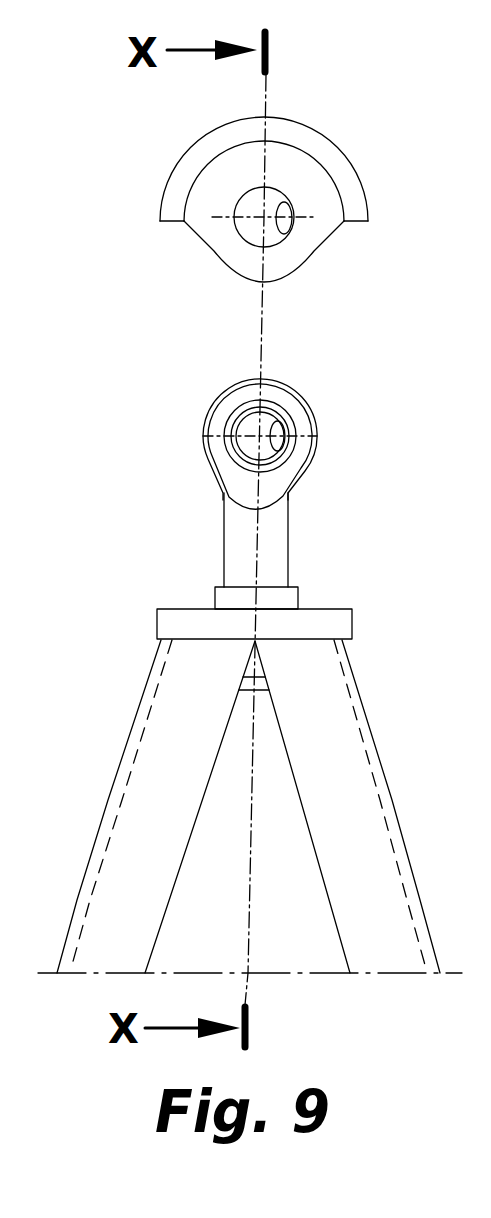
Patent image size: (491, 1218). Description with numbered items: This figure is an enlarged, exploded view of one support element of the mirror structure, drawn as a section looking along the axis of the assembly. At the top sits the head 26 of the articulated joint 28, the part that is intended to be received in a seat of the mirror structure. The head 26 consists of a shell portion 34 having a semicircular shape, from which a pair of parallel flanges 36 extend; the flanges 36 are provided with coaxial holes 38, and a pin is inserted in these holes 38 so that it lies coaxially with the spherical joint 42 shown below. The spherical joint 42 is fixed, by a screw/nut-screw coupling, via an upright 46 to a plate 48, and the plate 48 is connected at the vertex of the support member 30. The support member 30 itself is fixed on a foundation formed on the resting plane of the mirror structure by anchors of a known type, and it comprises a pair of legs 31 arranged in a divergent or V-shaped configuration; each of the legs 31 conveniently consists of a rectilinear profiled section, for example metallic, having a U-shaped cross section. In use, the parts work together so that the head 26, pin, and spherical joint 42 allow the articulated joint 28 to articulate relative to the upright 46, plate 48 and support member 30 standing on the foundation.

The head 26 is at (259, 165).
The shell portion 34 is at (188, 170).
The flanges 36 is at (223, 249).
The holes 38 is at (283, 234).
The articulated joint 28 is at (293, 442).
The spherical joint 42 is at (318, 449).
The upright 46 is at (277, 540).
The plate 48 is at (193, 623).
The support member 30 is at (265, 781).
The legs 31 is at (133, 785).